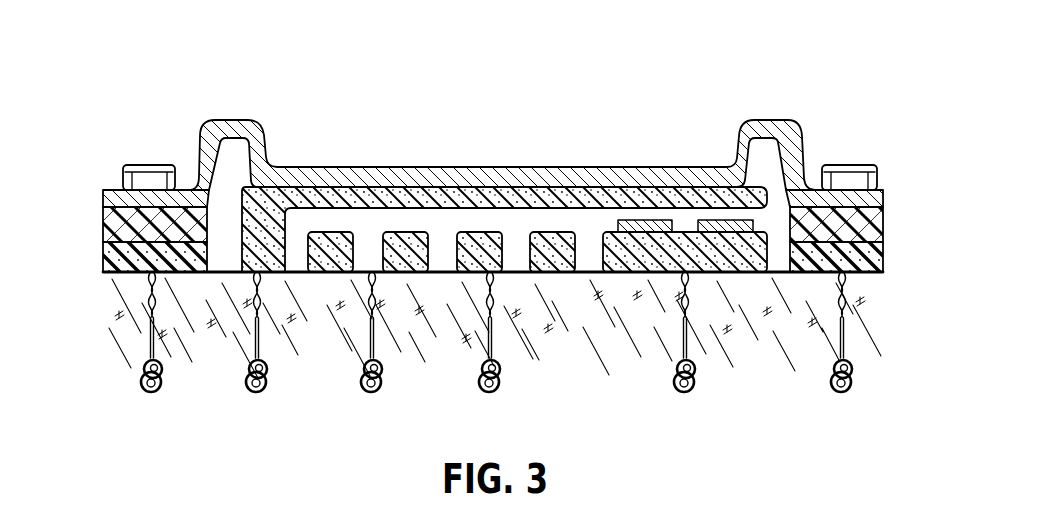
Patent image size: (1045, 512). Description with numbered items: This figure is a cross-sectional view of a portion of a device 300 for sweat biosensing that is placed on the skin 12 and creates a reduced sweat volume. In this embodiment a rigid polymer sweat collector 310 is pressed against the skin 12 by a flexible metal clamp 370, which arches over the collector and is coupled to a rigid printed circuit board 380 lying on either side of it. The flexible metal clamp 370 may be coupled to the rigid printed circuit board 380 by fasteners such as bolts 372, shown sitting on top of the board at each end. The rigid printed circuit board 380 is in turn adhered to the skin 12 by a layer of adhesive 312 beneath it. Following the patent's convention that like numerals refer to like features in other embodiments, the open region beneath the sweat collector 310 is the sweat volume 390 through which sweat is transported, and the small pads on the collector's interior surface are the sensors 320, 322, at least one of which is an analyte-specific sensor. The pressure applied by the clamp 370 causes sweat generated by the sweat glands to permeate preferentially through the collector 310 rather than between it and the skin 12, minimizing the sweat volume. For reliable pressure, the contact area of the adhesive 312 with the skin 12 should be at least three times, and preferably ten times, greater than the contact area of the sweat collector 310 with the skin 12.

The device 300 is at (200, 66).
The flexible metal clamp 370 is at (329, 167).
The rigid polymer sweat collector 310 is at (423, 196).
The cavity 390 is at (514, 242).
The first electrode / contact pad 320 is at (626, 220).
The second electrode / contact pad 322 is at (707, 220).
The rigid printed circuit board 380 is at (106, 222).
The adhesive 312 is at (106, 254).
The bolts 372 is at (145, 165).
The skin 12 is at (760, 323).